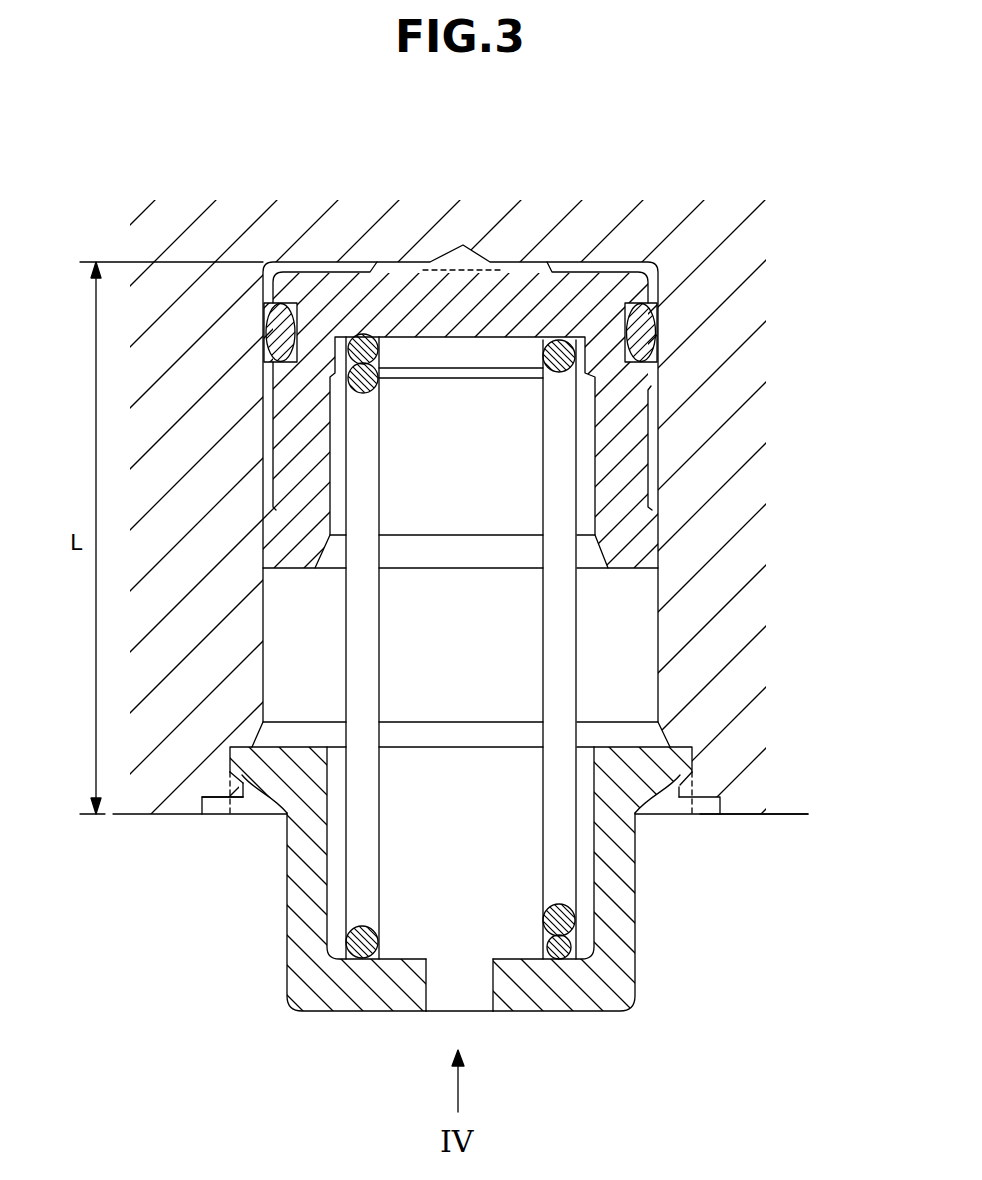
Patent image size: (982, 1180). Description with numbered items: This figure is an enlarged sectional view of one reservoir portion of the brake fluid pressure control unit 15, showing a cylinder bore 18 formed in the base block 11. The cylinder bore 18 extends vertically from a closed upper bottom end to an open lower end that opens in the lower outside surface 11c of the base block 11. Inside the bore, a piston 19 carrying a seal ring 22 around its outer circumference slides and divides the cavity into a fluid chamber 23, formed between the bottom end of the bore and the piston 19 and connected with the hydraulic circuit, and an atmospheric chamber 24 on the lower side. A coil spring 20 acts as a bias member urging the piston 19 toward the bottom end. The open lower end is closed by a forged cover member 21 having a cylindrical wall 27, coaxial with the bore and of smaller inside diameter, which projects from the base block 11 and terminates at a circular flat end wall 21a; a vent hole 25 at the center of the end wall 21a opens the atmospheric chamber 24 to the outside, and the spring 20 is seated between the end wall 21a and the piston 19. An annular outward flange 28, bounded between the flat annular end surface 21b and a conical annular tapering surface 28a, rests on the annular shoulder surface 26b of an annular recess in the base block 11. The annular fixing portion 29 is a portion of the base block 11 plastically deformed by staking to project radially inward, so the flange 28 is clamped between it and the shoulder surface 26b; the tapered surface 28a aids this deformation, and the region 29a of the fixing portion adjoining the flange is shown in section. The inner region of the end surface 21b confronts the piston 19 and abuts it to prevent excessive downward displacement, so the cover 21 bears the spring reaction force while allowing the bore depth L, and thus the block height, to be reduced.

The base block 11 is at (153, 772).
The lower outside surface 11c is at (762, 815).
The valve assembly 15 is at (479, 552).
The cylinder bore 18 is at (653, 628).
The piston 19 is at (627, 436).
The coil spring 20 is at (575, 487).
The cover member 21 is at (466, 901).
The circular flat end wall 21a is at (503, 992).
The flat annular end surface 21b is at (665, 730).
The seal ring 22 is at (647, 338).
The fluid chamber 23 is at (327, 263).
The atmospheric chamber 24 is at (405, 825).
The vent hole 25 is at (445, 995).
The annular shoulder surface 26b is at (215, 775).
The cylindrical wall 27 is at (634, 928).
The annular outward flange 28 is at (695, 757).
The annular tapering surface 28a is at (652, 818).
The annular fixing portion 29 is at (235, 790).
The fastener head 29a is at (213, 795).